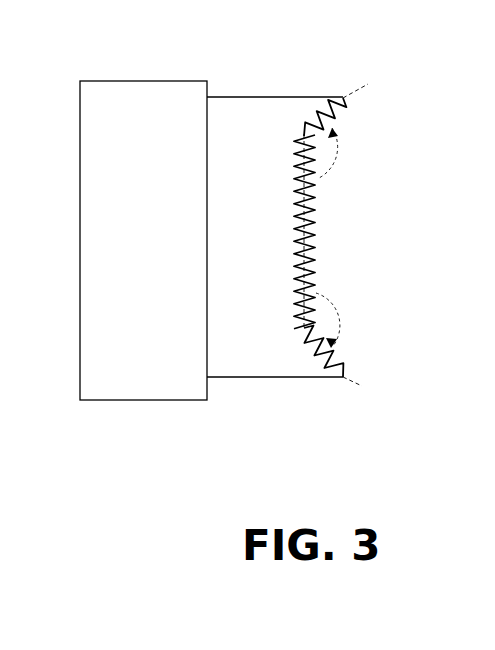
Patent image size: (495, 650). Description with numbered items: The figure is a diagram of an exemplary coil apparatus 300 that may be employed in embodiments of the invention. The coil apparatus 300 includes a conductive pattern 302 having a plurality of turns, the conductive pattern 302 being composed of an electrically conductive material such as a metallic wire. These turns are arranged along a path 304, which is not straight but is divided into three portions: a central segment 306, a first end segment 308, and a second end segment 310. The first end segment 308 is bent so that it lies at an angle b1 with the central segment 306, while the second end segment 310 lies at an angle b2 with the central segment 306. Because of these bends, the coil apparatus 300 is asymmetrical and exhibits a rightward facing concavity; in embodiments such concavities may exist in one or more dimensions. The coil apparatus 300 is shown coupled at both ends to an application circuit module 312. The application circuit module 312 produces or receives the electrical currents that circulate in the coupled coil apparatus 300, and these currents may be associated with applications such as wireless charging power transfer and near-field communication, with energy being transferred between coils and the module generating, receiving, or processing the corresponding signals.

The coil apparatus 300 is at (216, 50).
The conductive pattern 302 is at (358, 88).
The path 304 is at (360, 382).
The central segment 306 is at (298, 246).
The first end segment 308 is at (318, 124).
The second end segment 310 is at (302, 335).
The application circuit module 312 is at (143, 240).
The angle b1 is at (341, 158).
The angle b2 is at (332, 306).